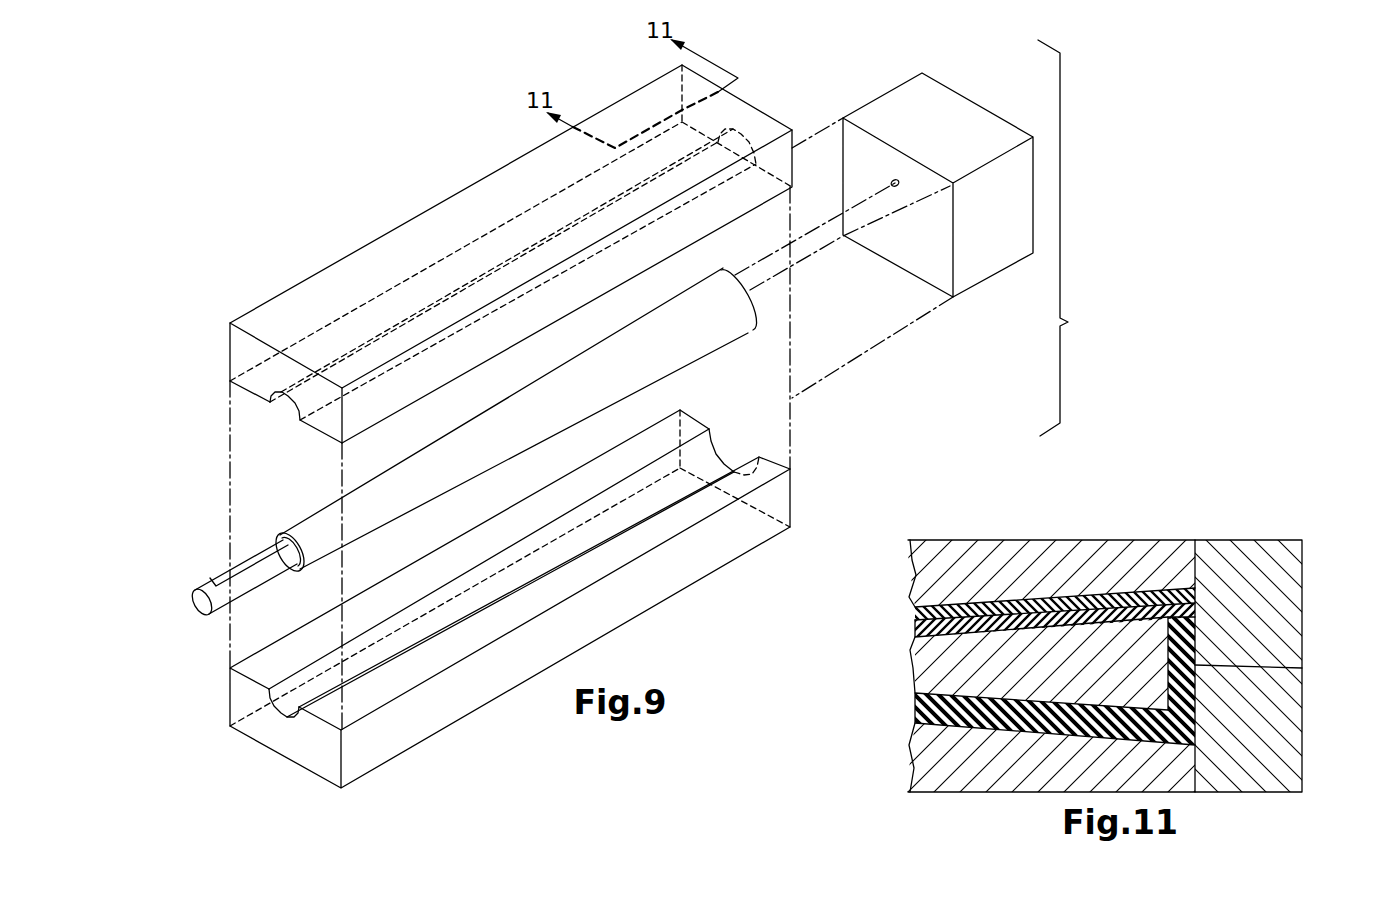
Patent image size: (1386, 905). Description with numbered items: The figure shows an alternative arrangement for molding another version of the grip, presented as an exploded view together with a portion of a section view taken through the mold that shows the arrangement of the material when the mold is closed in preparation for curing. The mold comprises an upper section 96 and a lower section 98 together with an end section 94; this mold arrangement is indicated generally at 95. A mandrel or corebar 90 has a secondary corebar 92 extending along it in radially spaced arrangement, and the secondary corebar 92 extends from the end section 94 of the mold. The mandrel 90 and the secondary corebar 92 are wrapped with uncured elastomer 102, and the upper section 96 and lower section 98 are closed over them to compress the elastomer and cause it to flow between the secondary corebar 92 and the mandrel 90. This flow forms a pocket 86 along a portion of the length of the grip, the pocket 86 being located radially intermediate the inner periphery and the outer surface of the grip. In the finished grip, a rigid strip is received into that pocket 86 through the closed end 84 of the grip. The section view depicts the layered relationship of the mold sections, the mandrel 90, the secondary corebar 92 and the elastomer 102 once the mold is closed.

In FIG. 11, the closed end 84 is at (1302, 668).
In FIG. 11, the pocket 86 is at (912, 612).
In FIG. 9, the mandrel or corebar 90 is at (203, 587).
In FIG. 11, the mandrel or corebar 90 is at (957, 655).
In FIG. 9, the secondary corebar 92 is at (897, 182).
In FIG. 11, the secondary corebar 92 is at (1063, 598).
In FIG. 9, the end section 94 is at (988, 112).
In FIG. 11, the end section 94 is at (1252, 540).
In FIG. 9, the fiber mounting assembly 95 is at (1071, 238).
In FIG. 11, the fiber mounting assembly 95 is at (1310, 611).
In FIG. 9, the upper section 96 is at (365, 246).
In FIG. 11, the upper section 96 is at (1001, 540).
In FIG. 9, the lower section 98 is at (610, 632).
In FIG. 11, the lower section 98 is at (985, 793).
In FIG. 9, the uncured elastomer 102 is at (720, 316).
In FIG. 11, the uncured elastomer 102 is at (942, 710).